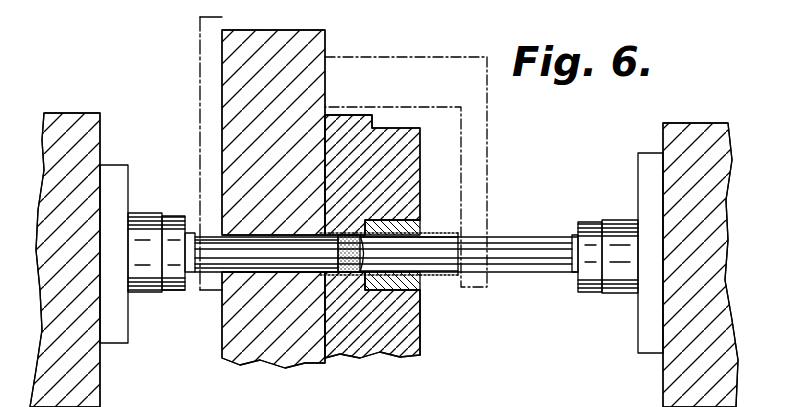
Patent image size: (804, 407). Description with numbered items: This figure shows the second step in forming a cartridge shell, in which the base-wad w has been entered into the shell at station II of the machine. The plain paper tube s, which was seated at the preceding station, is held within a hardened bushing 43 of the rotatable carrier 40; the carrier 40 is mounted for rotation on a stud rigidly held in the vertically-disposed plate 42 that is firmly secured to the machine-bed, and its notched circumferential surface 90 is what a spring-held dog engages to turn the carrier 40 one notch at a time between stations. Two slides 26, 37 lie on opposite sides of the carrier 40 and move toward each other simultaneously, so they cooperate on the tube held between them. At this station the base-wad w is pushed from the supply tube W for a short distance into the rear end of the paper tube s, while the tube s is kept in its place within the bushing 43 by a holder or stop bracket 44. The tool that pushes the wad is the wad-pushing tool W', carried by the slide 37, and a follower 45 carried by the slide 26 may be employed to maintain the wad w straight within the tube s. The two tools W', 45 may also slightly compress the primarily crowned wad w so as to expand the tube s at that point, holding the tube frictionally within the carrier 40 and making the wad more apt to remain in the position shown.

The station II is at (81, 68).
The slide 37 is at (92, 143).
The tube W is at (185, 153).
The wad-pushing tool W' is at (243, 215).
The vertically-disposed plate 42 is at (279, 36).
The carrier 40 is at (394, 128).
The notched circumferential surface 90 is at (346, 114).
The hardened bushing 43 is at (420, 310).
The base-wad w is at (350, 234).
The plain paper tube s is at (438, 234).
The holder or stop bracket 44 is at (487, 183).
The follower 45 is at (528, 248).
The slide 26 is at (696, 131).